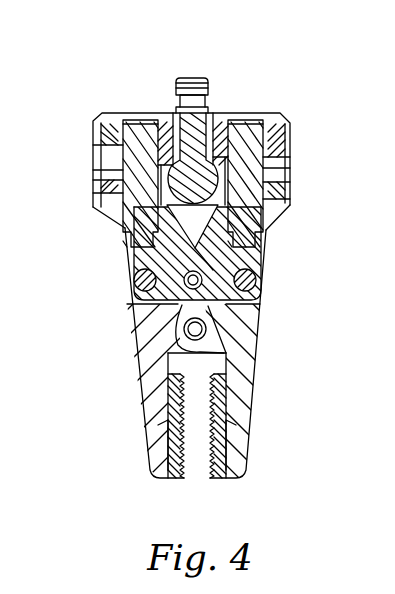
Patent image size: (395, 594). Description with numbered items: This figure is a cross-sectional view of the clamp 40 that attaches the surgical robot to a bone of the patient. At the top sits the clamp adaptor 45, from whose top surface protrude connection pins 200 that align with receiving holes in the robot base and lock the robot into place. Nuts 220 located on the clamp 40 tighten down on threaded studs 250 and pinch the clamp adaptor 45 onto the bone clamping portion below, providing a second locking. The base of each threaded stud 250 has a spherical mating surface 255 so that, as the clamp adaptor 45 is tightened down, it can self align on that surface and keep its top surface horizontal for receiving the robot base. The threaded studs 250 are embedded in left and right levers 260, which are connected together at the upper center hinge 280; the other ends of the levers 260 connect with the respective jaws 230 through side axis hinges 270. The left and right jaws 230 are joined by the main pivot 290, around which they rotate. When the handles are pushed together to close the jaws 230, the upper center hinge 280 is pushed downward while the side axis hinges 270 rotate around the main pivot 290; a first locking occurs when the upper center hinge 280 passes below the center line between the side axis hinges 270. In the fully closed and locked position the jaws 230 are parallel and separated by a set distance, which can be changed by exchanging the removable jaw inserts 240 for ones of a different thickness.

The clamp 40 is at (146, 96).
The clamp adaptor 45 is at (218, 122).
The connection pins 200 is at (185, 76).
The nuts 220 is at (100, 132).
The jaws 230 is at (143, 388).
The removable jaw inserts 240 is at (163, 440).
The threaded studs 250 is at (112, 165).
The spherical mating surface 255 is at (112, 193).
The levers 260 is at (135, 259).
The side axis hinge 270 is at (132, 279).
The upper center hinge 280 is at (183, 291).
The main pivot 290 is at (202, 329).